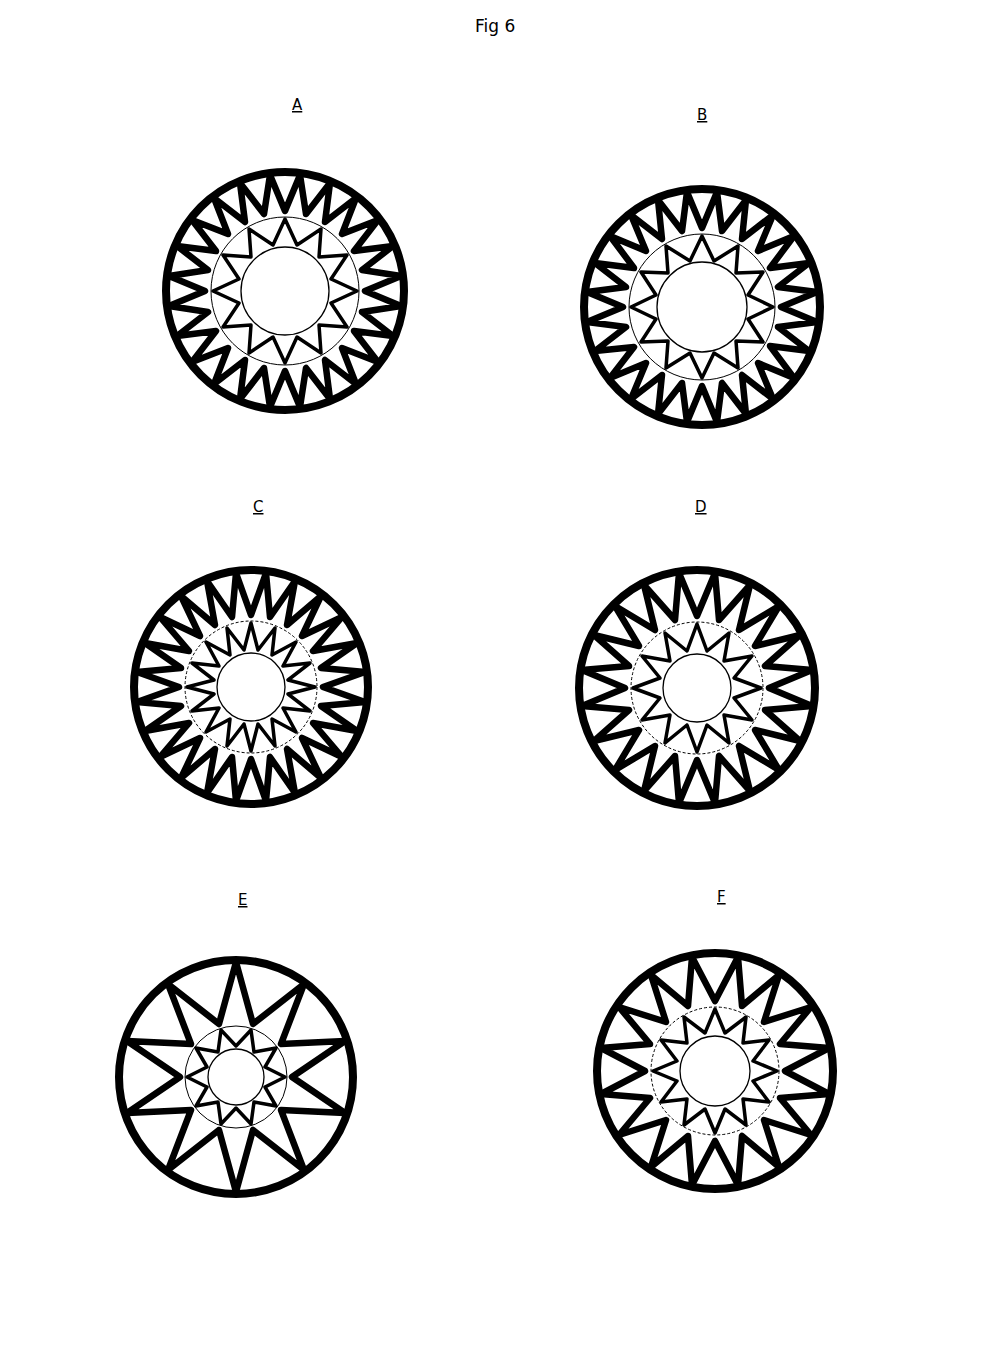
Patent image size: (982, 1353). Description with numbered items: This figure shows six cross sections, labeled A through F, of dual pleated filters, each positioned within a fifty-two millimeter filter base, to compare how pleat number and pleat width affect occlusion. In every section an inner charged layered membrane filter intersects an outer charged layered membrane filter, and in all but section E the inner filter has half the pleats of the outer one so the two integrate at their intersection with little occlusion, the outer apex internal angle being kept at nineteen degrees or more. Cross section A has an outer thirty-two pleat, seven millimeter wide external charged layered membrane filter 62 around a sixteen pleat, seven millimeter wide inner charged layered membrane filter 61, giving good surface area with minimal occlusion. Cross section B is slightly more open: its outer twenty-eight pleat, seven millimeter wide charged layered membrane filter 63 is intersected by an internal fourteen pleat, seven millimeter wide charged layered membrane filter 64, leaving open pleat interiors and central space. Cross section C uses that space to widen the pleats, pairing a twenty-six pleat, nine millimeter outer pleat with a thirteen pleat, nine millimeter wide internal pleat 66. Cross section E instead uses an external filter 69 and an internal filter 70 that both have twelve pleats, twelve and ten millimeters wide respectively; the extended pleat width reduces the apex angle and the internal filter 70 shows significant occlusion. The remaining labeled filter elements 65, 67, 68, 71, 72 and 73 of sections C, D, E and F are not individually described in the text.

The inner charged layered membrane filter 61 is at (183, 223).
The external charged layered membrane filter 62 is at (187, 310).
The outer charged layered membrane filter 63 is at (587, 347).
The internal charged layered membrane filter 64 is at (808, 280).
The outer spring spokes 65 is at (135, 672).
The internal pleat 66 is at (293, 678).
The outer spring spokes 67 is at (578, 665).
The inner spring spokes 68 is at (723, 613).
The external filter 69 is at (155, 1065).
The internal filter 70 is at (270, 1122).
The hub ring 71 is at (187, 1140).
The outer spring spokes 72 is at (600, 1035).
The inner spring spokes 73 is at (742, 1003).